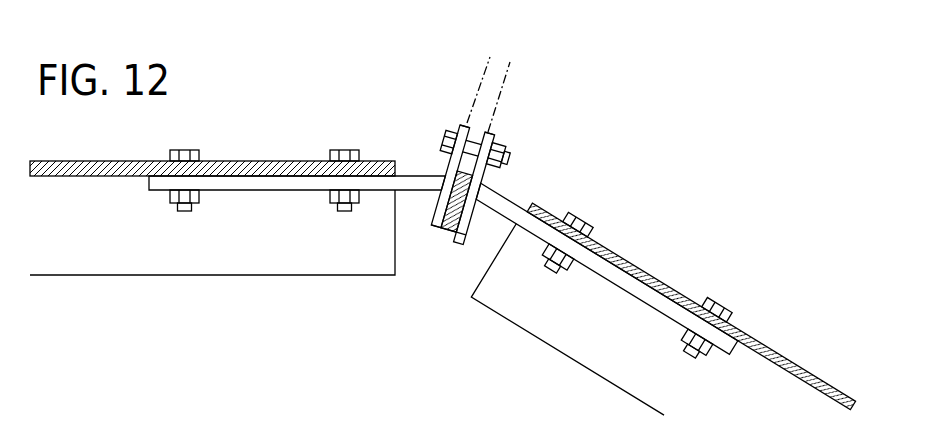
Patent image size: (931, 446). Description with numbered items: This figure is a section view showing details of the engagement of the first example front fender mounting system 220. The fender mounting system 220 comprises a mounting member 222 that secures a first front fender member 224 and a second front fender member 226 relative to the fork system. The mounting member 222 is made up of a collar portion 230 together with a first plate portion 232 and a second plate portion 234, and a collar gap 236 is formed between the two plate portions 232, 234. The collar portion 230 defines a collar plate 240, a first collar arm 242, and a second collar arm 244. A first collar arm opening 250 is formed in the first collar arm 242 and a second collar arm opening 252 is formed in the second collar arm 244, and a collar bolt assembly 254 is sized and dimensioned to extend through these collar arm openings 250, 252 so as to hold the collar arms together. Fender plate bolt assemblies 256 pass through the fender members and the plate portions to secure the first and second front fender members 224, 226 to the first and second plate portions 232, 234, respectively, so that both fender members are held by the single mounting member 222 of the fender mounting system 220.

The fender mounting system 220 is at (528, 203).
The mounting member 222 is at (457, 266).
The first front fender member 224 is at (772, 357).
The second front fender member 226 is at (97, 168).
The collar portion 230 is at (466, 203).
The first plate portion 232 is at (262, 182).
The second plate portion 234 is at (630, 285).
The collar gap 236 is at (486, 63).
The collar plate 240 is at (466, 195).
The first collar arm 242 is at (449, 173).
The second collar arm 244 is at (488, 186).
The first collar arm opening 250 is at (467, 122).
The second collar arm opening 252 is at (490, 133).
The collar bolt assembly 254 is at (519, 153).
The fender plate bolt assemblies 256 is at (167, 151).